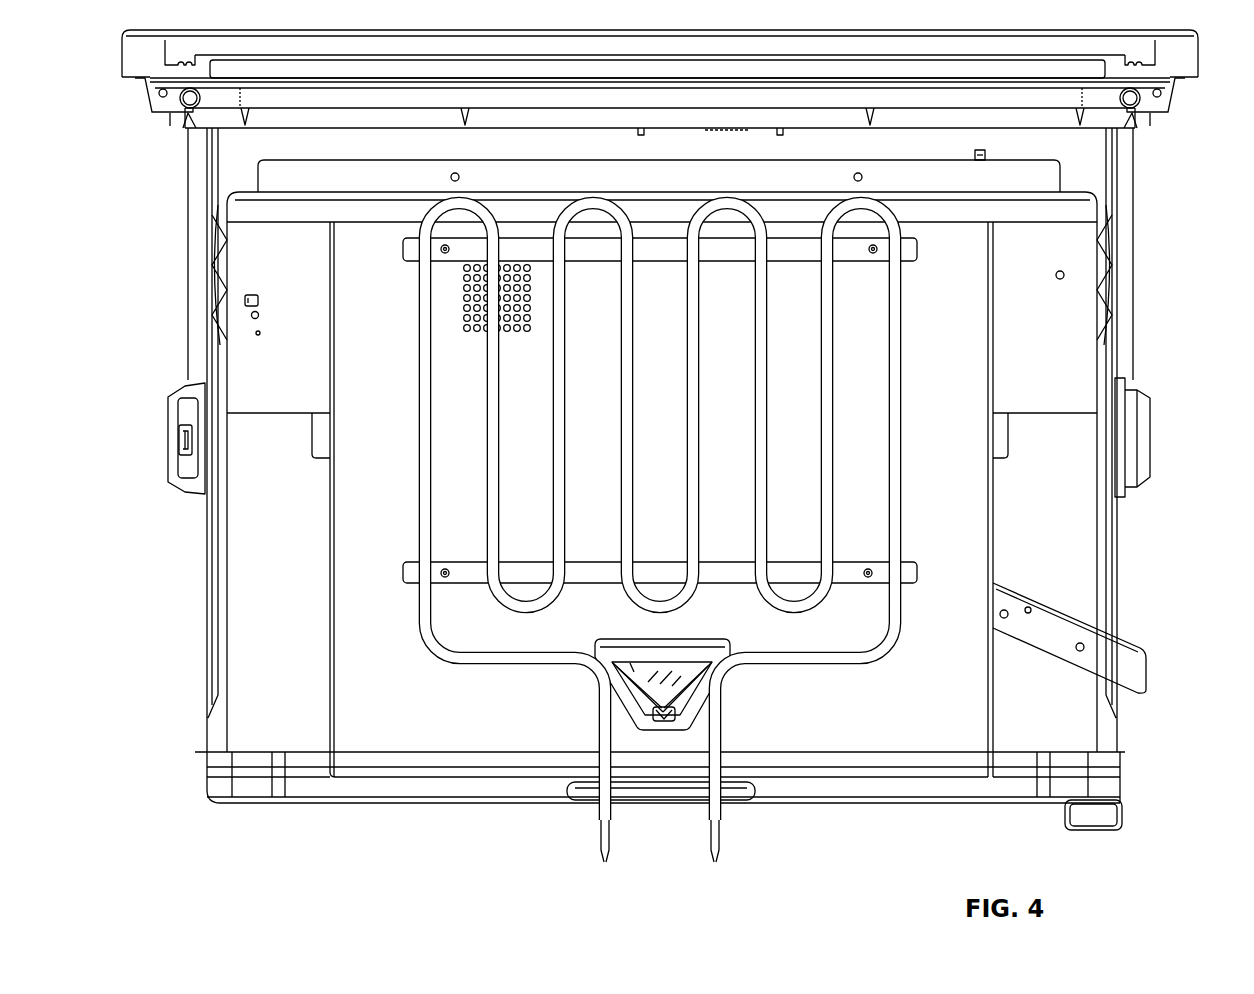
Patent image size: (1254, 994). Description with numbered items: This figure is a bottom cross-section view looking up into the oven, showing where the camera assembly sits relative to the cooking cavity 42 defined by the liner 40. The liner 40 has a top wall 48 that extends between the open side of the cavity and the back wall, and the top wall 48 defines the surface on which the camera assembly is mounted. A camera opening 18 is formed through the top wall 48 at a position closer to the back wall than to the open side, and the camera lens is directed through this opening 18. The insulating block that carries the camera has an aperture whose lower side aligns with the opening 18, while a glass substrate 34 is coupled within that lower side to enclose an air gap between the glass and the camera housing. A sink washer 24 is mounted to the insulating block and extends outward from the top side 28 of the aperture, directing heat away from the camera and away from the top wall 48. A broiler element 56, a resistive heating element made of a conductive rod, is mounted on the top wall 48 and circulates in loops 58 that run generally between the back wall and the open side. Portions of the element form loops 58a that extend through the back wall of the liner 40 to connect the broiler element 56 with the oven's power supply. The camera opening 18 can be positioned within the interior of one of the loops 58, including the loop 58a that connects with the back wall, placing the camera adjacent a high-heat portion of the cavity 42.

The camera opening 18 is at (730, 653).
The sink washer 24 is at (690, 710).
The top side of the aperture 28 is at (665, 720).
The glass substrate 34 is at (633, 665).
The liner 40 is at (1093, 623).
The cooking cavity 42 is at (1058, 581).
The top wall 48 is at (963, 383).
The broiler element 56 is at (915, 322).
The loops 58 is at (795, 298).
The loops extending through the back wall 58a is at (586, 638).